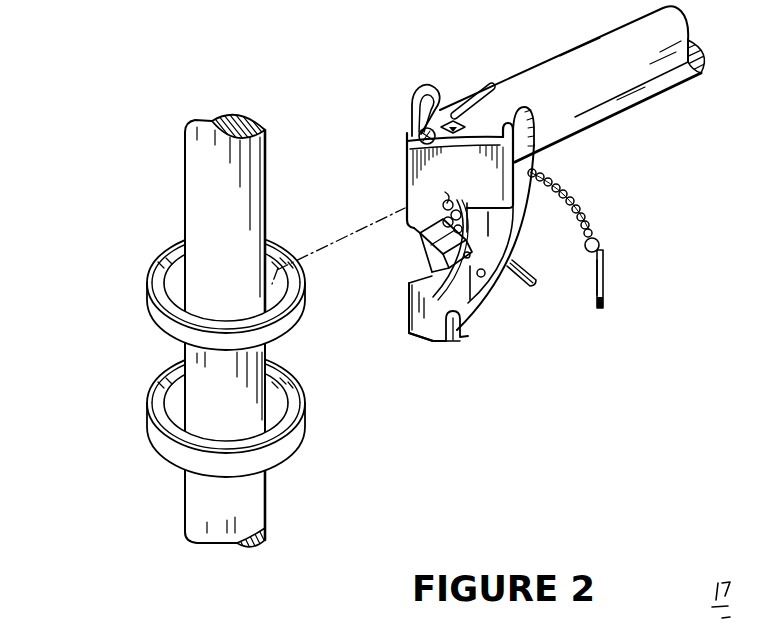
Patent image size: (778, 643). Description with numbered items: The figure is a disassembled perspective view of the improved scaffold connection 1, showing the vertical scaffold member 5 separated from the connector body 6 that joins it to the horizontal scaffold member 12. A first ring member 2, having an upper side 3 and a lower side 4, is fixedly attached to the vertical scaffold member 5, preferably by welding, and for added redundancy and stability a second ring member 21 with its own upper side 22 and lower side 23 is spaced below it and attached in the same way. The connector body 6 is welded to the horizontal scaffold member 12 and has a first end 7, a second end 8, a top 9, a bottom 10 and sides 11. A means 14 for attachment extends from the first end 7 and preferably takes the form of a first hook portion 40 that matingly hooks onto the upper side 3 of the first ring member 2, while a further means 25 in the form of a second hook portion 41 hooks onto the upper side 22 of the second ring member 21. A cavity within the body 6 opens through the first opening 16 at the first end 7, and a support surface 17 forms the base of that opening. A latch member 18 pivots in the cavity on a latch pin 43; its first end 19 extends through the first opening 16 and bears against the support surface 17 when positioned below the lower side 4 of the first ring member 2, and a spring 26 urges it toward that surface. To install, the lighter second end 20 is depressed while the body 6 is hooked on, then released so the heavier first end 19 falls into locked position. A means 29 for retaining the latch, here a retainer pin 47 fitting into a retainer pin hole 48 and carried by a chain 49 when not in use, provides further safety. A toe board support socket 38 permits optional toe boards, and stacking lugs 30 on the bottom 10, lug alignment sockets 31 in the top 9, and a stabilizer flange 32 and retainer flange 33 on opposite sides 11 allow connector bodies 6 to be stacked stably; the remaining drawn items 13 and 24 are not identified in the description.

The scaffold connection 1 is at (444, 390).
The first ring member 2 is at (139, 285).
The upper side 3 is at (171, 264).
The lower side 4 is at (160, 334).
The vertical scaffold member 5 is at (248, 500).
The connector body 6 is at (396, 178).
The first end 7 is at (397, 316).
The second end 8 is at (530, 213).
The top 9 is at (445, 86).
The bottom 10 is at (463, 360).
The sides 11 is at (498, 240).
The horizontal scaffold member 12 is at (642, 97).
The rail top surface 13 is at (538, 76).
The means for attachment 14 is at (406, 228).
The first opening 16 is at (486, 224).
The support surface 17 is at (410, 298).
The latch member 18 is at (432, 272).
The first end 19 is at (419, 234).
The second end 20 is at (535, 285).
The second ring member 21 is at (139, 415).
The upper side 22 is at (170, 409).
The lower side 23 is at (160, 456).
The bottom edge 24 is at (418, 355).
The means for attachment to second ring member 25 is at (445, 212).
The spring 26 is at (482, 202).
The means for retaining latch member 29 is at (611, 297).
The stacking lugs 30 is at (462, 338).
The lug alignment sockets 31 is at (452, 118).
The stabilizer flange 32 is at (426, 96).
The retainer flange 33 is at (533, 153).
The toe board support socket 38 is at (418, 137).
The first hook portion 40 is at (413, 190).
The second hook portion 41 is at (408, 320).
The latch pin 43 is at (485, 277).
The retainer pin 47 is at (604, 269).
The retainer pin hole 48 is at (471, 254).
The chain 49 is at (590, 222).